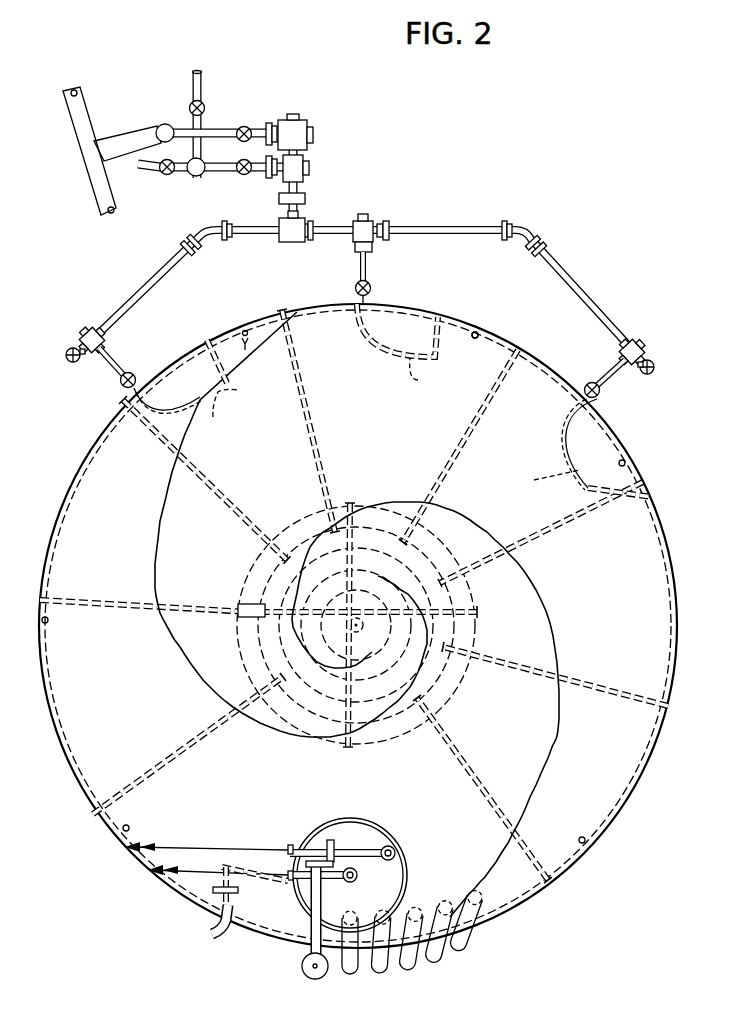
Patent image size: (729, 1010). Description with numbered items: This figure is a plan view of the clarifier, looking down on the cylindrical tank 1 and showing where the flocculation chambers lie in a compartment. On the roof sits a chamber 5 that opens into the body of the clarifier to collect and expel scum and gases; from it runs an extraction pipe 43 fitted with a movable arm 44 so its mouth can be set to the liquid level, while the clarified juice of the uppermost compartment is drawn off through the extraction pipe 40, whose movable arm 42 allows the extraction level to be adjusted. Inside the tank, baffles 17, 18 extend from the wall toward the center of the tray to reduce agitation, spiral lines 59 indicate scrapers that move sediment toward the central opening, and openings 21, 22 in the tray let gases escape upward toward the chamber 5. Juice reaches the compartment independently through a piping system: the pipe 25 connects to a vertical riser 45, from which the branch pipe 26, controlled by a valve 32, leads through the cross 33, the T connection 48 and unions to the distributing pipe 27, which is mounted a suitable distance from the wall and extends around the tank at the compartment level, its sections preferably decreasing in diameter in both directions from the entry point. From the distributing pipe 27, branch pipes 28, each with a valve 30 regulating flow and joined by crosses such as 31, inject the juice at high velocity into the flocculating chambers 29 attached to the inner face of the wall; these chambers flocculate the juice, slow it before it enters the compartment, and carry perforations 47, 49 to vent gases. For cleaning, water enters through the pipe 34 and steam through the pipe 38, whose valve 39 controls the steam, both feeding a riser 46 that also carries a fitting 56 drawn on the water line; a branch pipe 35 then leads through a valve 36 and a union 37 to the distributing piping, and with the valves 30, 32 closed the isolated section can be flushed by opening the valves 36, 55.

The cylindrical tank 1 is at (45, 708).
The chamber 5 is at (372, 820).
The baffle 17 is at (316, 436).
The baffle 18 is at (464, 437).
The opening 21 is at (247, 340).
The opening 22 is at (474, 338).
The pipe 25 is at (80, 96).
The branch pipe 26 is at (191, 126).
The distributing pipe 27 is at (246, 234).
The branch pipe 28 is at (113, 363).
The flocculating chamber 29 is at (215, 387).
The valve 30 is at (120, 382).
The cross 31 is at (88, 333).
The valve 32 is at (244, 127).
The cross 33 is at (306, 123).
The pipe 34 is at (142, 169).
The branch pipe 35 is at (221, 172).
The valve 36 is at (244, 176).
The union 37 is at (270, 181).
The pipe 38 is at (201, 79).
The valve 39 is at (215, 94).
The extraction pipe 40 is at (210, 925).
The movable arm 42 is at (360, 876).
The extraction pipe 43 is at (310, 932).
The movable arm 44 is at (397, 853).
The vertical riser 45 is at (162, 124).
The riser 46 is at (196, 177).
The perforation 47 is at (390, 424).
The T connection 48 is at (309, 170).
The perforation 49 is at (203, 350).
The valve 55 is at (70, 362).
The valve 56 is at (167, 177).
The spiral lines 59 is at (162, 507).